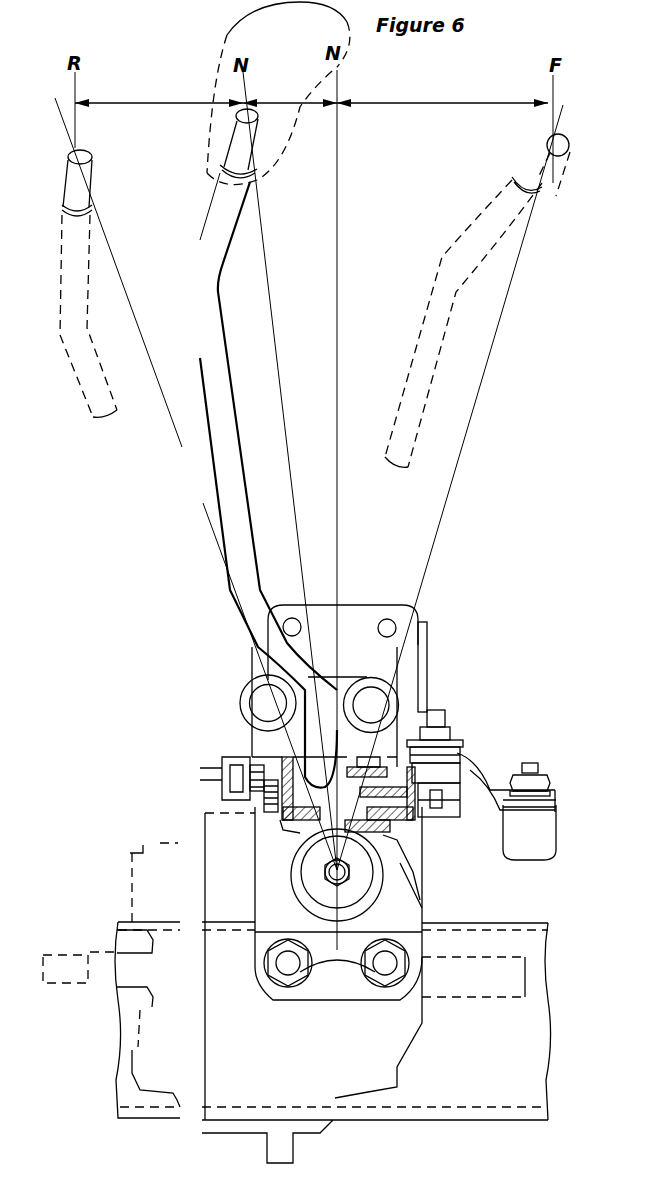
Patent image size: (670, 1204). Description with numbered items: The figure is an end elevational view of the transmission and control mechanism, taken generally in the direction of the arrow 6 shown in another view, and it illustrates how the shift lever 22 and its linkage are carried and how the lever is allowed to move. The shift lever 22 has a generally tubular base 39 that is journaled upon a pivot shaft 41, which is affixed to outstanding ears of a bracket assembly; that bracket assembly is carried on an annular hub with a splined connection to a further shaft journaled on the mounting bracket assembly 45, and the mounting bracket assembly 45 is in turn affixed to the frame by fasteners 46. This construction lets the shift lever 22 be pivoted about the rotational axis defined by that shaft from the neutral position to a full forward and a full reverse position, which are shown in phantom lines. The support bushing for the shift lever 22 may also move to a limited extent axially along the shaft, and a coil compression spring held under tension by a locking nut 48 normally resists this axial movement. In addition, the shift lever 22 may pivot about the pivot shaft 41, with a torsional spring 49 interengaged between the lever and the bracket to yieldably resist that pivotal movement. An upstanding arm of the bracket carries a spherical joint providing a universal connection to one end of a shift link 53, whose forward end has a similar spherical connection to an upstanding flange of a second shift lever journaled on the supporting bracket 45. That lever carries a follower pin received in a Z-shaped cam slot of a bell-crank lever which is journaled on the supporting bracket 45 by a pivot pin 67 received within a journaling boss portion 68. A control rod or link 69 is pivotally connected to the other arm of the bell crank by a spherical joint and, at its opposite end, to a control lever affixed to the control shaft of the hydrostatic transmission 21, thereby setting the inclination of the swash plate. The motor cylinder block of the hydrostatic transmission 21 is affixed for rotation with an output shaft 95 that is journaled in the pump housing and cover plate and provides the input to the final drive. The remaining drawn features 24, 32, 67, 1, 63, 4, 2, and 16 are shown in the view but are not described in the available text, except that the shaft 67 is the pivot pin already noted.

The shift lever 22 is at (62, 330).
The lever assembly 24 is at (478, 573).
The shift link 53 is at (358, 650).
The pivot bearing 32 is at (280, 773).
The pivot pin 67 is at (442, 716).
The journaling boss portion 68 is at (447, 735).
The control rod or link 69 is at (478, 752).
The arrow 6 is at (484, 752).
The bolt 1 is at (536, 762).
The pivot shaft 41 is at (450, 818).
The clamp 63 is at (180, 767).
The tubular base 39 is at (307, 833).
The torsional spring 49 is at (342, 873).
The locking nut 48 is at (331, 877).
The mounting bracket assembly 45 is at (240, 897).
The fasteners 46 is at (382, 1000).
The pedestal 4 is at (317, 930).
The frame 2 is at (545, 925).
The frame member 16 is at (497, 995).
The hydrostatic transmission 21 is at (150, 838).
The output shaft 95 is at (50, 985).